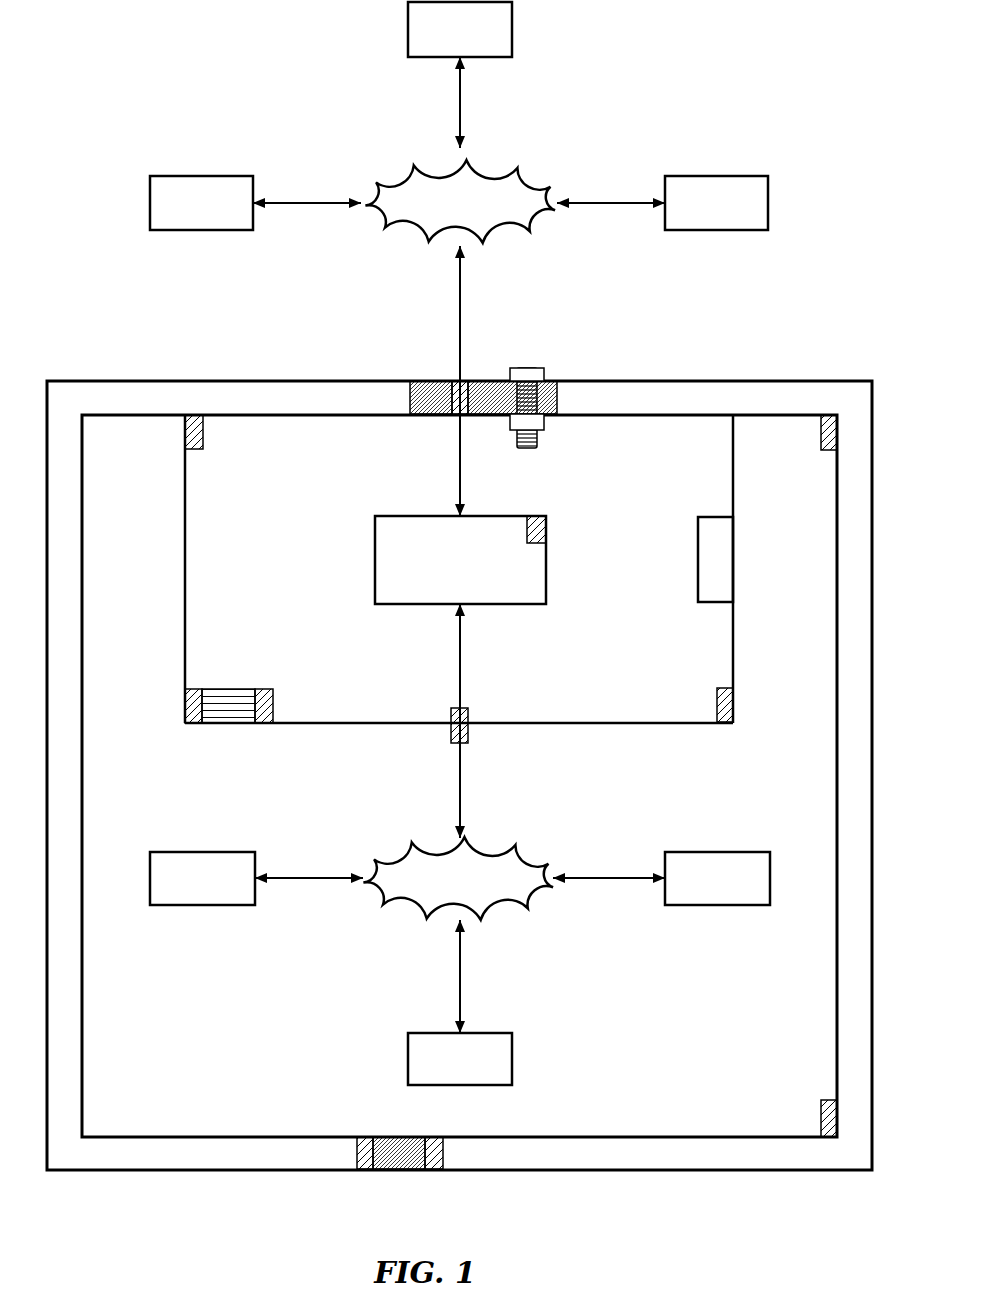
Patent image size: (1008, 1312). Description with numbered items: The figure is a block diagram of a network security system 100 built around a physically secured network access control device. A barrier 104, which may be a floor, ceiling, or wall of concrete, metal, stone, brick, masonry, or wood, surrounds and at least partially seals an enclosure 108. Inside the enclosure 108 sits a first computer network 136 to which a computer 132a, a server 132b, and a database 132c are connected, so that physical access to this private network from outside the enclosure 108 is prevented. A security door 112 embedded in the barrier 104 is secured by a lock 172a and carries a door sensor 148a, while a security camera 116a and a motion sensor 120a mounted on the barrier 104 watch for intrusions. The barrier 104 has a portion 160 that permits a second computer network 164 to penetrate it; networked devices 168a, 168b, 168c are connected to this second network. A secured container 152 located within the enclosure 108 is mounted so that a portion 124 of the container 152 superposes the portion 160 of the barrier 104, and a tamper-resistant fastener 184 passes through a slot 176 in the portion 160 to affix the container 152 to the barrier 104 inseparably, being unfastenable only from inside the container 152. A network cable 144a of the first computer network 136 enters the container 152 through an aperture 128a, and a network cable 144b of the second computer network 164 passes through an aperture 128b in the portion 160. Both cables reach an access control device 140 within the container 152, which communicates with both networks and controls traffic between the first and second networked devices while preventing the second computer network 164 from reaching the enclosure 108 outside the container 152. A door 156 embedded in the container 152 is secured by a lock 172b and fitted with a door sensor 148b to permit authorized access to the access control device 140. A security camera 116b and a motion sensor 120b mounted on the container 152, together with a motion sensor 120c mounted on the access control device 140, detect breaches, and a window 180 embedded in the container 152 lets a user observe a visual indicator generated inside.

The network security system 100 is at (116, 303).
The barrier 104 is at (138, 392).
The enclosure 108 is at (172, 1066).
The security door 112 is at (407, 1170).
The security camera 116a is at (837, 1116).
The security camera 116b is at (204, 448).
The motion sensor 120a is at (837, 432).
The motion sensor 120b is at (733, 708).
The motion sensor 120c is at (546, 530).
The portion of the container 124 is at (668, 390).
The aperture 128a is at (468, 712).
The aperture 128b is at (455, 382).
The computer 132a is at (737, 888).
The server 132b is at (222, 888).
The database 132c is at (480, 1066).
The first computer network 136 is at (474, 889).
The access control device 140 is at (474, 570).
The network cable 144a is at (460, 790).
The network cable 144b is at (460, 310).
The door sensor 148a is at (365, 1170).
The door sensor 148b is at (185, 705).
The secured container 152 is at (183, 568).
The door 156 is at (228, 724).
The portion of the barrier 160 is at (415, 383).
The second computer network 164 is at (474, 213).
The networked device 168a is at (221, 212).
The networked device 168b is at (736, 212).
The networked device 168c is at (480, 41).
The lock 172a is at (435, 1170).
The lock 172b is at (266, 724).
The slot 176 is at (540, 402).
The window 180 is at (722, 572).
The tamper-resistant fastener 184 is at (530, 368).